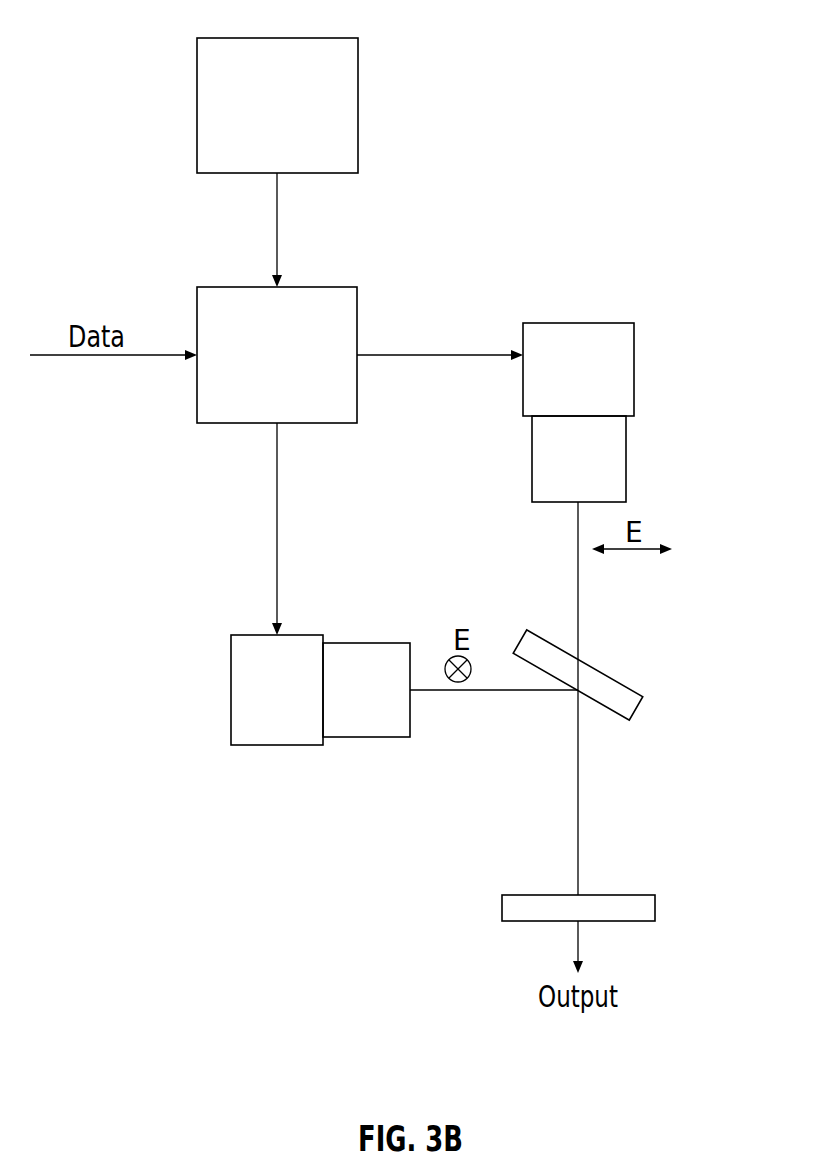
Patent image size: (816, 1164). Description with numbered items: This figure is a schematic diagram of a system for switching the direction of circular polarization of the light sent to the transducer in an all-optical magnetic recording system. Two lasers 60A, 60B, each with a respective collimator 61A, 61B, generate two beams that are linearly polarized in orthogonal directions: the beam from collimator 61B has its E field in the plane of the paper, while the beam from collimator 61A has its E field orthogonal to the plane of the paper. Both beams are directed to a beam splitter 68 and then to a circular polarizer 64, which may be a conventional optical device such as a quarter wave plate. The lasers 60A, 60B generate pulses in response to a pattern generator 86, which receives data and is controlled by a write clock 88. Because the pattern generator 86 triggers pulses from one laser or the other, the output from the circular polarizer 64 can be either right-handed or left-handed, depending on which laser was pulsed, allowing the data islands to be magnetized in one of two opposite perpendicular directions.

The write clock 88 is at (218, 38).
The pattern generator 86 is at (218, 287).
The laser 60A is at (247, 635).
The laser 60B is at (543, 323).
The collimator 61A is at (365, 643).
The collimator 61B is at (627, 458).
The beam splitter 68 is at (622, 687).
The circular polarizer 64 is at (530, 895).